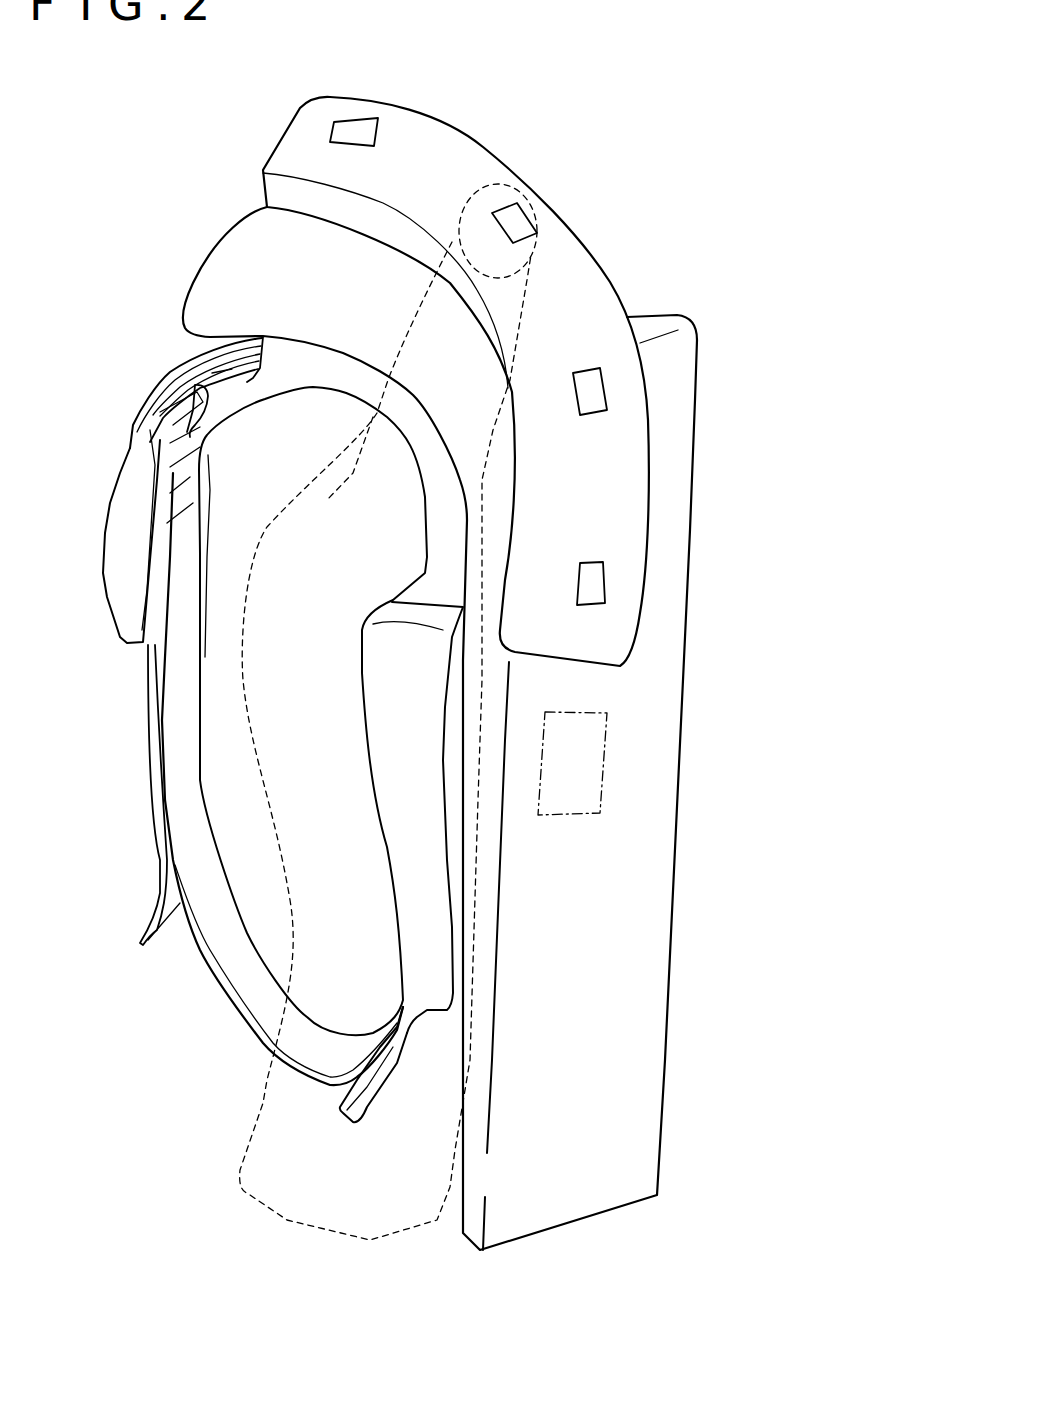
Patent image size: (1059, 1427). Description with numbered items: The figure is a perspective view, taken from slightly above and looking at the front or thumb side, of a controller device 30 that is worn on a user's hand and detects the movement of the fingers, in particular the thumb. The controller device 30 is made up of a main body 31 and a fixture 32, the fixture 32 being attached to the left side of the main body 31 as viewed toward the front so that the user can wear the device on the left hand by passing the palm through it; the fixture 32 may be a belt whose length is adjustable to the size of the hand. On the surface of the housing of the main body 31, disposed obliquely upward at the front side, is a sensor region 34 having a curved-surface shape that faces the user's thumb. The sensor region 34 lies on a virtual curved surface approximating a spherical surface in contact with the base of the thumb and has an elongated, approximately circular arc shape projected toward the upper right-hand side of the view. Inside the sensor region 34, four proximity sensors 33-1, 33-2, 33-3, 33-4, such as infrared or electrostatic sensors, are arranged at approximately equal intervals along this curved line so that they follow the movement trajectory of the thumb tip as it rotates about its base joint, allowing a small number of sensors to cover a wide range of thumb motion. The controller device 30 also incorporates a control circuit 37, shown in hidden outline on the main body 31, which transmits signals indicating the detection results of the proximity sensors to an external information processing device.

The controller device 30 is at (438, 696).
The main body 31 is at (643, 1134).
The fixture 32 is at (183, 805).
The proximity sensor 33-1 is at (357, 130).
The proximity sensor 33-2 is at (517, 220).
The proximity sensor 33-3 is at (593, 392).
The proximity sensor 33-4 is at (593, 588).
The sensor region 34 is at (447, 150).
The control circuit 37 is at (600, 752).